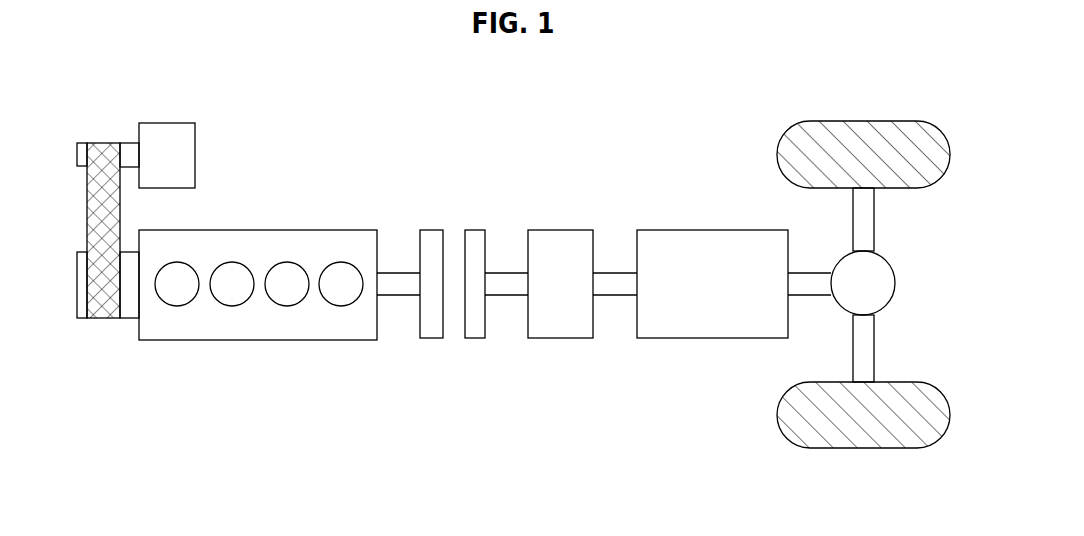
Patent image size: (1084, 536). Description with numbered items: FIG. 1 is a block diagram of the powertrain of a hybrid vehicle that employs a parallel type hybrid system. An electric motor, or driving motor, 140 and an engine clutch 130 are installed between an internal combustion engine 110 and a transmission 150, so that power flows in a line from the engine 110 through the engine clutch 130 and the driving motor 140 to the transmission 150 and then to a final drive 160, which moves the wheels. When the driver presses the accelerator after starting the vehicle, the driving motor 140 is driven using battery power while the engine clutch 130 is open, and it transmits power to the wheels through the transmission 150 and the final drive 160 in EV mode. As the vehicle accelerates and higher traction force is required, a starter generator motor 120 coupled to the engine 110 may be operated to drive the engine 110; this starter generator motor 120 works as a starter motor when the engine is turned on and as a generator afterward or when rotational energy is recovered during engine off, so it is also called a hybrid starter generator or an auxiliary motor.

The internal combustion engine 110 is at (332, 229).
The starter generator motor 120 is at (198, 133).
The engine clutch 130 is at (478, 227).
The electric motor 140 is at (565, 228).
The transmission 150 is at (748, 228).
The final drive 160 is at (897, 267).